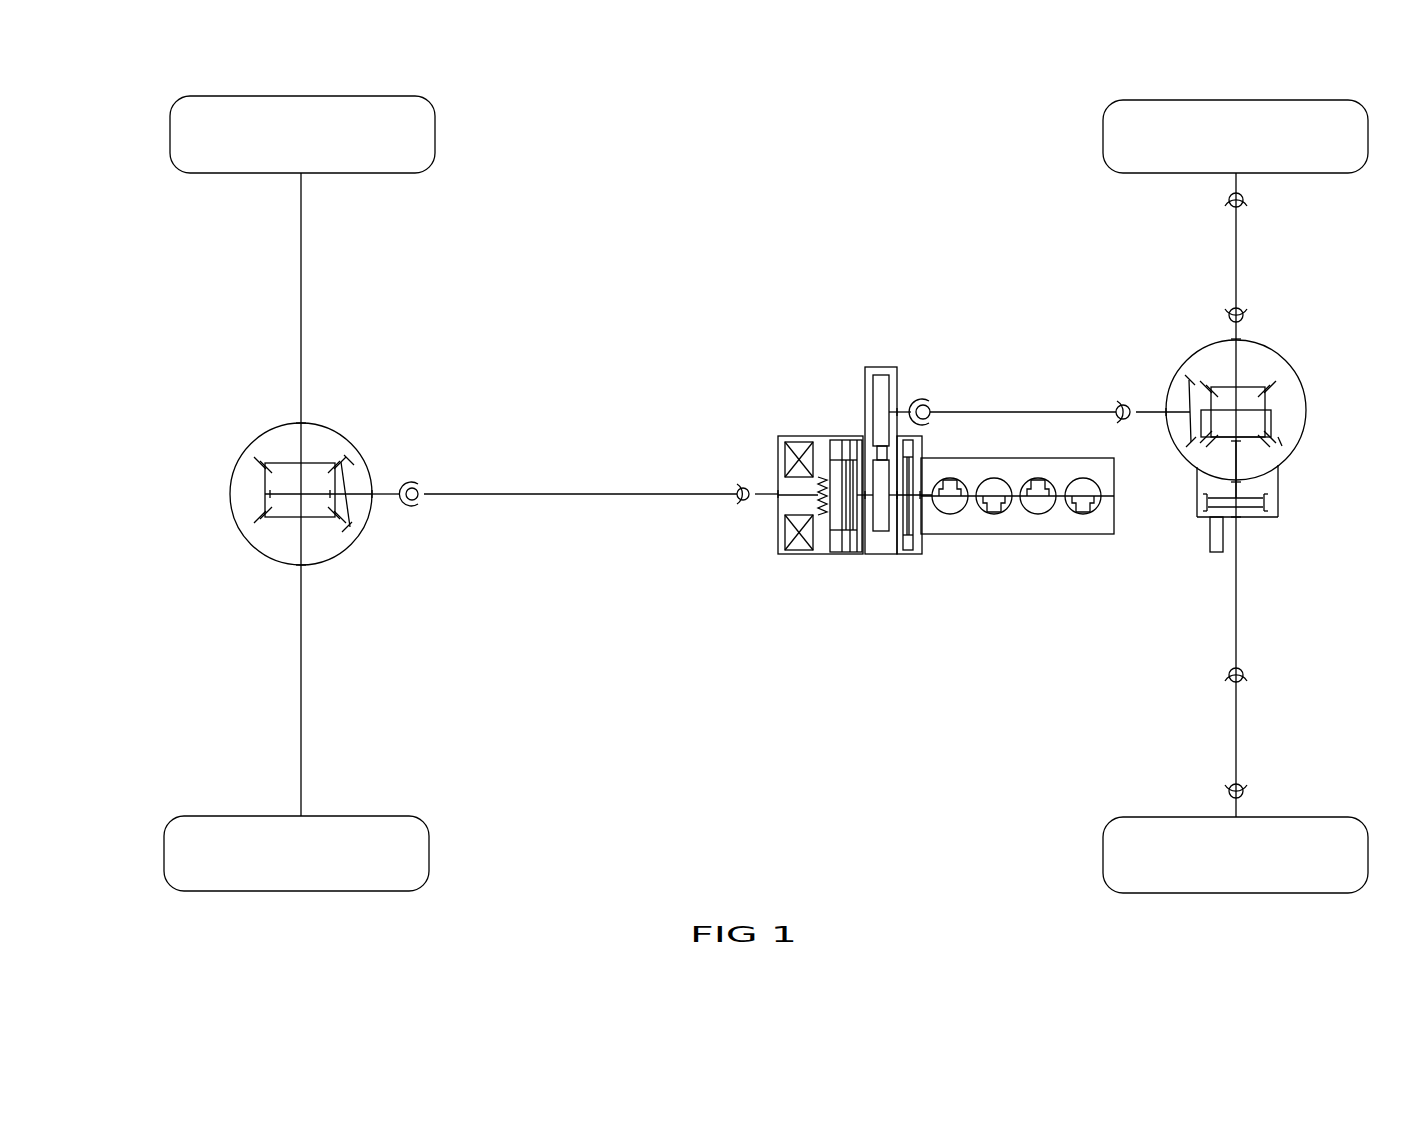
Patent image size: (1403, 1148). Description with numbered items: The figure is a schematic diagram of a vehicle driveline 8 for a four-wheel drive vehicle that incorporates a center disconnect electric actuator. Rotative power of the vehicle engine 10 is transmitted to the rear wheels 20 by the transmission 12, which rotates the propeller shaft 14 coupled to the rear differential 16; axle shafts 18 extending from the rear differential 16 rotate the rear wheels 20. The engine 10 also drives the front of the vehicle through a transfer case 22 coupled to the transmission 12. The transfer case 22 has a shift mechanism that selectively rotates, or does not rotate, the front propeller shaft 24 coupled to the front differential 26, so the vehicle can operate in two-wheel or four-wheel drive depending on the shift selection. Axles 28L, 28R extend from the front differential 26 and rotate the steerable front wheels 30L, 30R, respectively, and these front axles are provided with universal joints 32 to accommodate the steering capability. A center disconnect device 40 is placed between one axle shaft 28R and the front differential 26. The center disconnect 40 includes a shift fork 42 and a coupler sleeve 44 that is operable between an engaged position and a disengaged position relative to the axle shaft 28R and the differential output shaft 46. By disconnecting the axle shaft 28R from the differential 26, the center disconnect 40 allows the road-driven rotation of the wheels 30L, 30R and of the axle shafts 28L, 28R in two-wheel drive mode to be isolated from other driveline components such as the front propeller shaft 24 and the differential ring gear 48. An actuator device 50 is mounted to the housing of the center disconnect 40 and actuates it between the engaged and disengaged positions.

The vehicle driveline 8 is at (760, 223).
The vehicle engine 10 is at (1015, 534).
The transmission 12 is at (848, 554).
The propeller shaft 14 is at (663, 494).
The rear differential 16 is at (345, 435).
The axle shafts 18 is at (301, 321).
The rear wheels 20 is at (415, 175).
The transfer case 22 is at (866, 368).
The front propeller shaft 24 is at (1020, 412).
The front differential 26 is at (1293, 368).
The front axle 28L is at (1240, 333).
The front axle shaft 28R is at (1236, 588).
The front wheel 30L is at (1120, 173).
The front wheel 30R is at (1122, 817).
The universal joints 32 is at (1240, 205).
The center disconnect device 40 is at (1308, 493).
The shift fork 42 is at (1263, 495).
The coupler sleeve 44 is at (1210, 508).
The differential output shaft 46 is at (1232, 459).
The differential ring gear 48 is at (1280, 445).
The actuator device 50 is at (1215, 552).